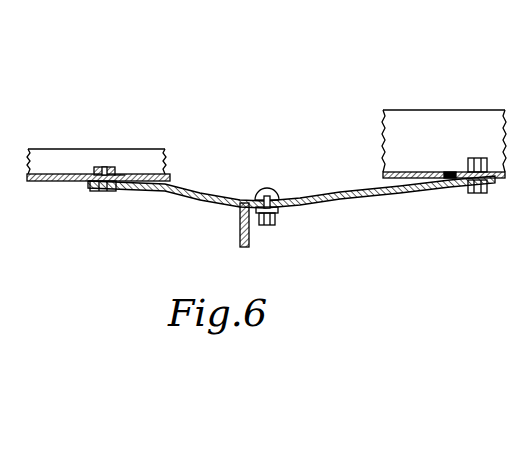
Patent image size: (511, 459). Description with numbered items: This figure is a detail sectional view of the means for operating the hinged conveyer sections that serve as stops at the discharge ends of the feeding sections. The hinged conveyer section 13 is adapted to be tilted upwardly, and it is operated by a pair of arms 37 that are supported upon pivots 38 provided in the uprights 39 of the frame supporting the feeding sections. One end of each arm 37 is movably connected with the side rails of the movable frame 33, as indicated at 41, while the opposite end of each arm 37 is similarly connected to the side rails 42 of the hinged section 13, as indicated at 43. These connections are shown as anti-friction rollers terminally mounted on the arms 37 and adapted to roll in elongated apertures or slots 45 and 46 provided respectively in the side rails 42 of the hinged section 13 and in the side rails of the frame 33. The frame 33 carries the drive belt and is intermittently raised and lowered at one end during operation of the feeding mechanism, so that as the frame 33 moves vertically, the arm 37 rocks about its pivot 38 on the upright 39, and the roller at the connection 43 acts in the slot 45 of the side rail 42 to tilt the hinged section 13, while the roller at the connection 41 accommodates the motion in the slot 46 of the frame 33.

The hinged conveyer section 13 is at (52, 147).
The frame 33 is at (416, 116).
The arm 37 is at (200, 207).
The pivot 38 is at (272, 220).
The upright 39 is at (242, 234).
The connection 41 is at (494, 165).
The side rail 42 is at (37, 180).
The connection 43 is at (112, 168).
The slot 45 is at (113, 174).
The slot 46 is at (451, 171).